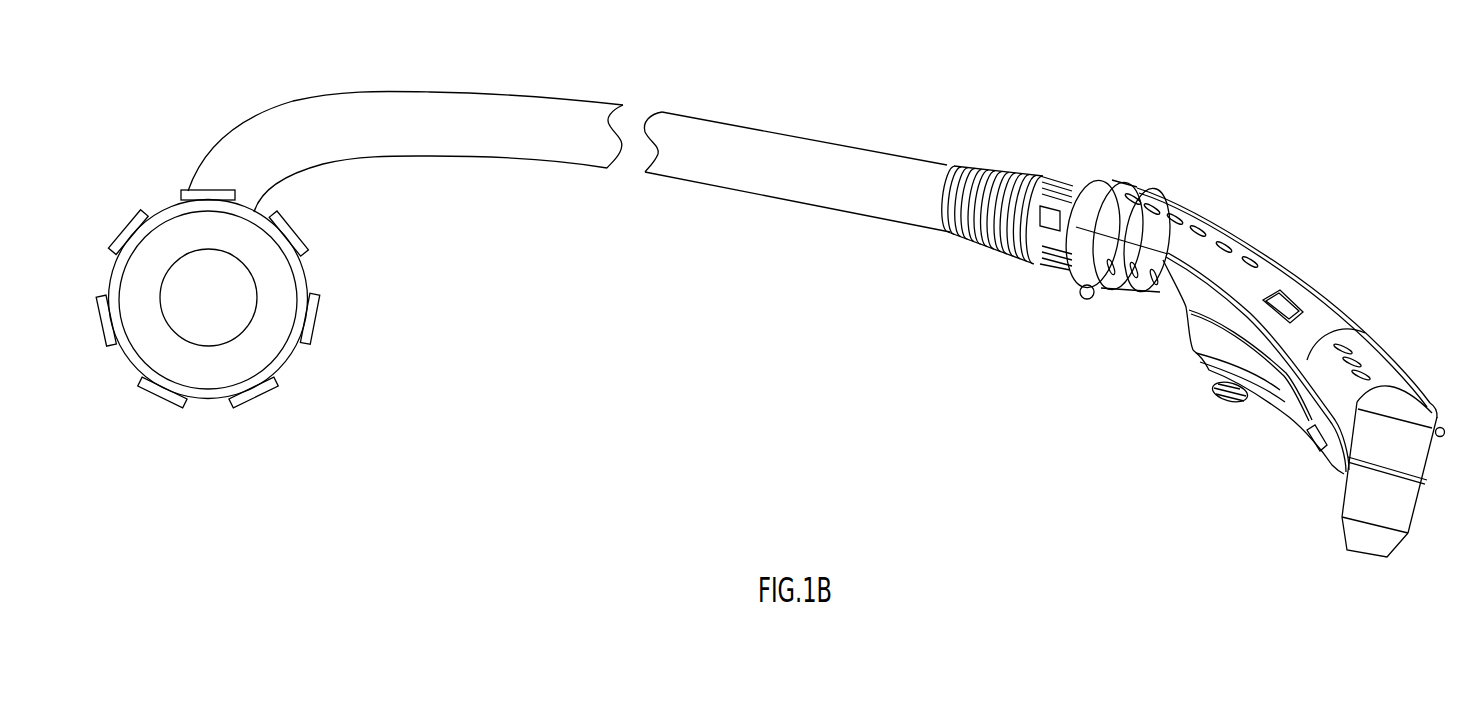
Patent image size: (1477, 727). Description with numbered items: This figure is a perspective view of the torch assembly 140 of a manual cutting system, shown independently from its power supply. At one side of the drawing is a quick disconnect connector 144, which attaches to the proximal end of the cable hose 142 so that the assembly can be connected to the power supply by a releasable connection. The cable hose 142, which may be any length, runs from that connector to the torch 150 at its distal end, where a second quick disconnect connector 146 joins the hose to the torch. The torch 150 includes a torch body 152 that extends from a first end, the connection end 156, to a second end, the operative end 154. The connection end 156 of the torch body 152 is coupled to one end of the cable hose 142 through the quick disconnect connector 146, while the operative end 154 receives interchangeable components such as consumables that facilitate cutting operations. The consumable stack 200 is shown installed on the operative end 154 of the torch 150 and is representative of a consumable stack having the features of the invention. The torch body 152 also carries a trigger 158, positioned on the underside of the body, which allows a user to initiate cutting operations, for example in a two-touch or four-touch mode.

The torch assembly 140 is at (947, 97).
The cable hose 142 is at (770, 199).
The quick disconnect connector 144 is at (328, 265).
The quick disconnect connector 146 is at (1093, 168).
The torch 150 is at (1135, 338).
The torch body 152 is at (1303, 267).
The operative end 154 is at (1438, 408).
The connection end 156 is at (1090, 233).
The trigger 158 is at (1210, 398).
The consumable stack 200 is at (1345, 510).